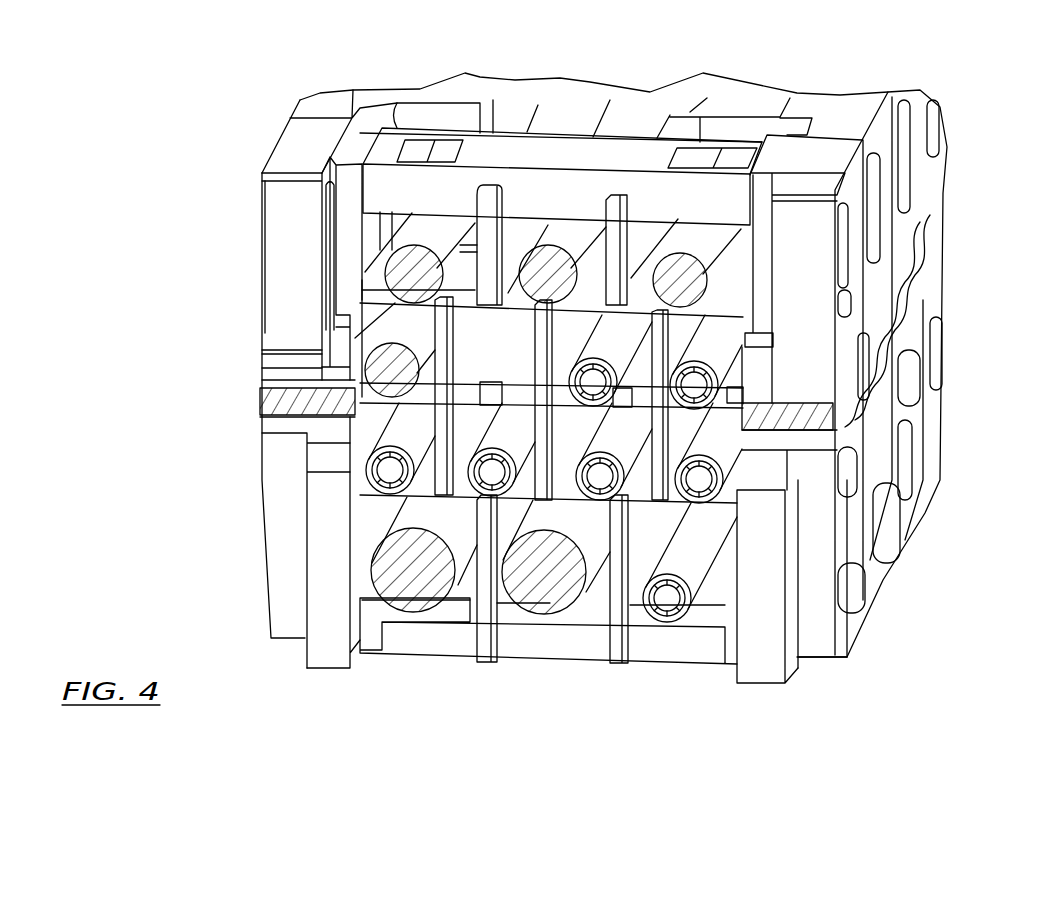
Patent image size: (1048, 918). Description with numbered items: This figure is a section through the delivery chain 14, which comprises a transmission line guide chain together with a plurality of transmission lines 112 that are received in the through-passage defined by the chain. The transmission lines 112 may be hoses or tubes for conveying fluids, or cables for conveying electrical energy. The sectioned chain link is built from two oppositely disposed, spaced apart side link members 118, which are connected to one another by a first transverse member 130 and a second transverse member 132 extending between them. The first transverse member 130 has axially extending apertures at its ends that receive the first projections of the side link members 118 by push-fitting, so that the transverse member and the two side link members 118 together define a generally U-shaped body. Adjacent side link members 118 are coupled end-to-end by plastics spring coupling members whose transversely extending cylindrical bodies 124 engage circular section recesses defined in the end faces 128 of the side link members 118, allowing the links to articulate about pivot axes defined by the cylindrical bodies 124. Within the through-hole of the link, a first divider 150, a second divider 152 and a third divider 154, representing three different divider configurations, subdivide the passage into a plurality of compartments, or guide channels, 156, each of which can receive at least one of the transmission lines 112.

The second transverse member 132 is at (572, 155).
The delivery chain 14 is at (880, 93).
The compartments (guide channels) 156 is at (378, 233).
The third divider 154 is at (375, 293).
The cylindrical bodies 124 is at (272, 403).
The side link members 118 is at (288, 543).
The end faces 128 is at (323, 650).
The first transverse member 130 is at (527, 653).
The first divider 150 is at (462, 612).
The transmission lines 112 is at (385, 597).
The second divider 152 is at (732, 400).